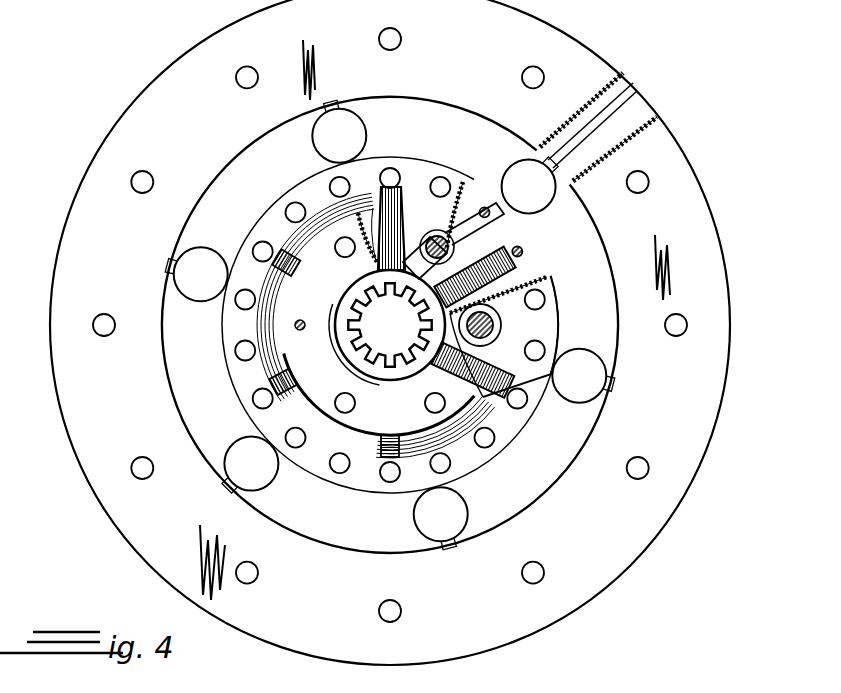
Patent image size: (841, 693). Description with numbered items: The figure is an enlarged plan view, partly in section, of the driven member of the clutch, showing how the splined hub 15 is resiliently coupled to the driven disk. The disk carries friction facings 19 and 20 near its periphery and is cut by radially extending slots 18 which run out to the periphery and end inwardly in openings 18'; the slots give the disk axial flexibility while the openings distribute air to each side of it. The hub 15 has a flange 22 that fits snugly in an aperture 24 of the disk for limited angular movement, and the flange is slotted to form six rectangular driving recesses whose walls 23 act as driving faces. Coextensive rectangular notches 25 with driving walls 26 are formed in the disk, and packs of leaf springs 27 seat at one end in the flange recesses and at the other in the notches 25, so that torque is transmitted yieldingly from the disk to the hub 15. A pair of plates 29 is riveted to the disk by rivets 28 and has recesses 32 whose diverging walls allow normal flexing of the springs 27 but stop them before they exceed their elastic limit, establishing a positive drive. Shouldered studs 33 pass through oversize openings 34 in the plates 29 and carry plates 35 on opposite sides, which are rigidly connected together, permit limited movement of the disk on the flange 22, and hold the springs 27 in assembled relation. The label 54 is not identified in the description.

The hub 15 is at (370, 363).
The radially extending slots 18 is at (411, 326).
The openings 18' is at (390, 325).
The facing 19 is at (553, 161).
The facing 20 is at (88, 197).
The flange 22 is at (448, 233).
The walls 23 is at (448, 281).
The aperture 24 is at (465, 232).
The notches 25 is at (503, 259).
The walls 26 is at (488, 255).
The leaf springs 27 is at (397, 187).
The rivets 28 is at (303, 208).
The plates 29 is at (278, 213).
The recesses 32 is at (403, 200).
The shouldered studs 33 is at (497, 334).
The oversize openings 34 is at (377, 257).
The plate 35 is at (328, 368).
The sector plate 54 is at (520, 350).